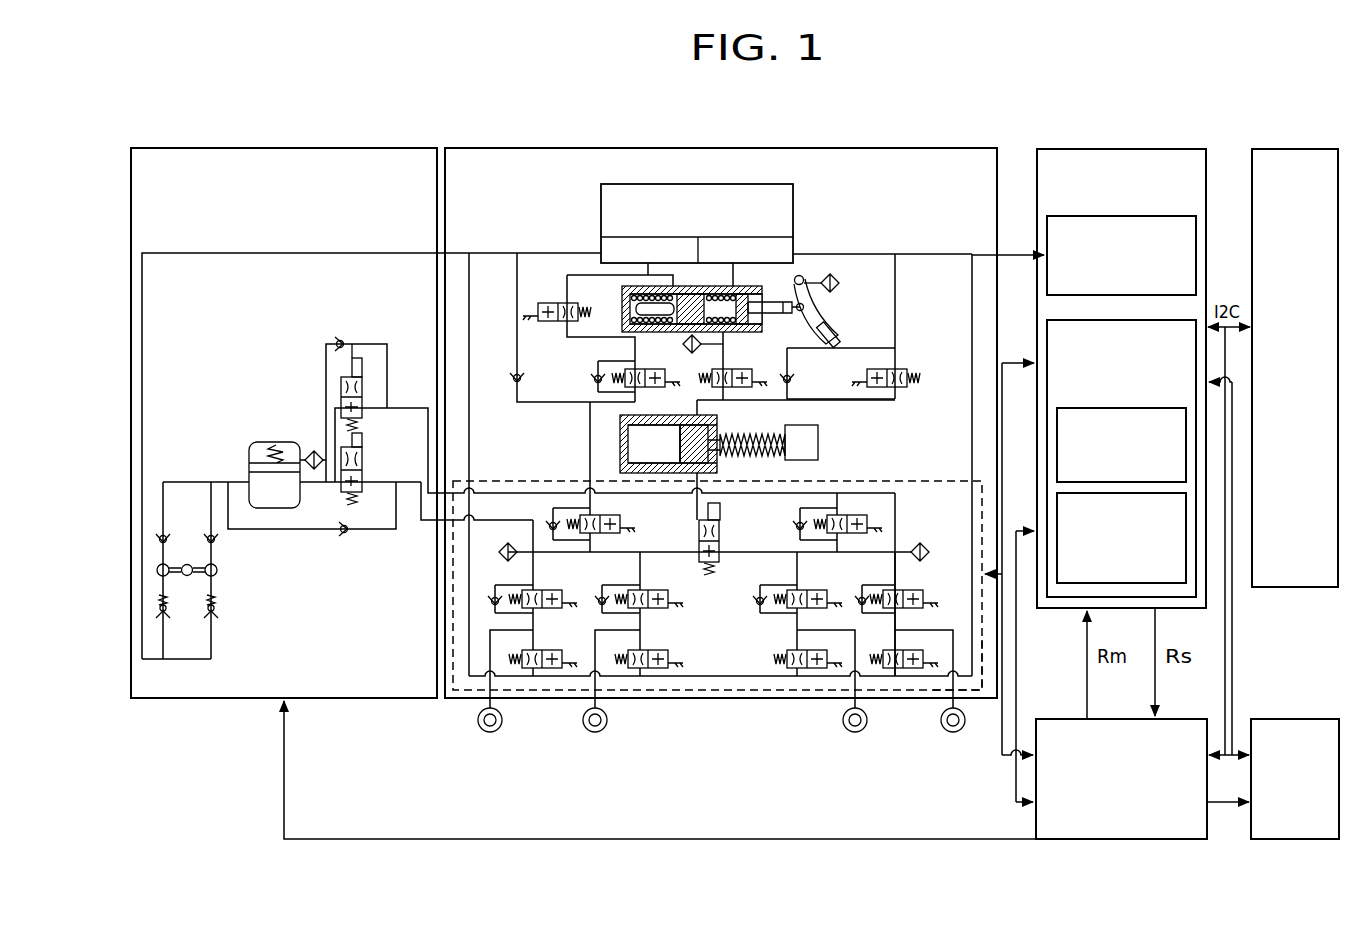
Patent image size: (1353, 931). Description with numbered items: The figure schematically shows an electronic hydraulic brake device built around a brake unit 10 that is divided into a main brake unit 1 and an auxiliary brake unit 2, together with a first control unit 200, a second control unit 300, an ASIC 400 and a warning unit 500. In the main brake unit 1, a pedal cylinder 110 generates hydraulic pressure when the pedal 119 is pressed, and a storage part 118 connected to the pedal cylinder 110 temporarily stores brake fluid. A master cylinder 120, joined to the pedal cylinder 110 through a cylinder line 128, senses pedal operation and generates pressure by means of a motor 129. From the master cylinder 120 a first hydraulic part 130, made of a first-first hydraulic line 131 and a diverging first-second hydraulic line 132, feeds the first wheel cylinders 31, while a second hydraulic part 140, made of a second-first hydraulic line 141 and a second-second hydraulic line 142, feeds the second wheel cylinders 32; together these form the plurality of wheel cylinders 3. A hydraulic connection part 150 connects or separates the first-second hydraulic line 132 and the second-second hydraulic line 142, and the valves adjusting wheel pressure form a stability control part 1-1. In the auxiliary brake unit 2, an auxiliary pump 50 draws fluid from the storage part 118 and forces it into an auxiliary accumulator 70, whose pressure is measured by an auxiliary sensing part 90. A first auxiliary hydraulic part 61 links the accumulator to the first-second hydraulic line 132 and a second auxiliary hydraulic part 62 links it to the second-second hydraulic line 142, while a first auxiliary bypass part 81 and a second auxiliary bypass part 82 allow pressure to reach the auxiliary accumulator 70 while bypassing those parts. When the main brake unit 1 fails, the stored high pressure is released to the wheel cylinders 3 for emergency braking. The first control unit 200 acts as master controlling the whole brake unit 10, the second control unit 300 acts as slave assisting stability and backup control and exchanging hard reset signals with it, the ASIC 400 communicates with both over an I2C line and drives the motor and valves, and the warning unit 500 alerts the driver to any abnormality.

The brake unit 10 is at (564, 374).
The main brake unit 1 is at (721, 397).
The auxiliary brake unit 2 is at (404, 147).
The storage part 118 is at (601, 192).
The pedal cylinder 110 is at (752, 281).
The pedal 119 is at (814, 322).
The cylinder line 128 is at (727, 355).
The master cylinder 120 is at (745, 468).
The motor 129 is at (818, 442).
The first hydraulic part 130 is at (532, 539).
The first-first hydraulic line 131 is at (586, 419).
The first-second hydraulic line 132 is at (547, 566).
The second hydraulic part 140 is at (717, 571).
The second-first hydraulic line 141 is at (845, 504).
The second-second hydraulic line 142 is at (899, 571).
The hydraulic connection part 150 is at (720, 568).
The second auxiliary bypass part 82 is at (369, 342).
The auxiliary accumulator 70 is at (272, 440).
The auxiliary sensing part 90 is at (308, 450).
The second auxiliary hydraulic part 62 is at (401, 405).
The first auxiliary hydraulic part 61 is at (414, 485).
The auxiliary pump 50 is at (170, 562).
The first auxiliary bypass part 81 is at (308, 533).
The wheel cylinders 3 is at (721, 730).
The first wheel cylinders 31 is at (582, 723).
The second wheel cylinders 32 is at (904, 724).
The stability control part 1-1 is at (980, 695).
The first control unit 200 is at (1122, 149).
The second control unit 300 is at (1036, 820).
The ASIC 400 is at (1295, 149).
The warning unit 500 is at (1295, 719).